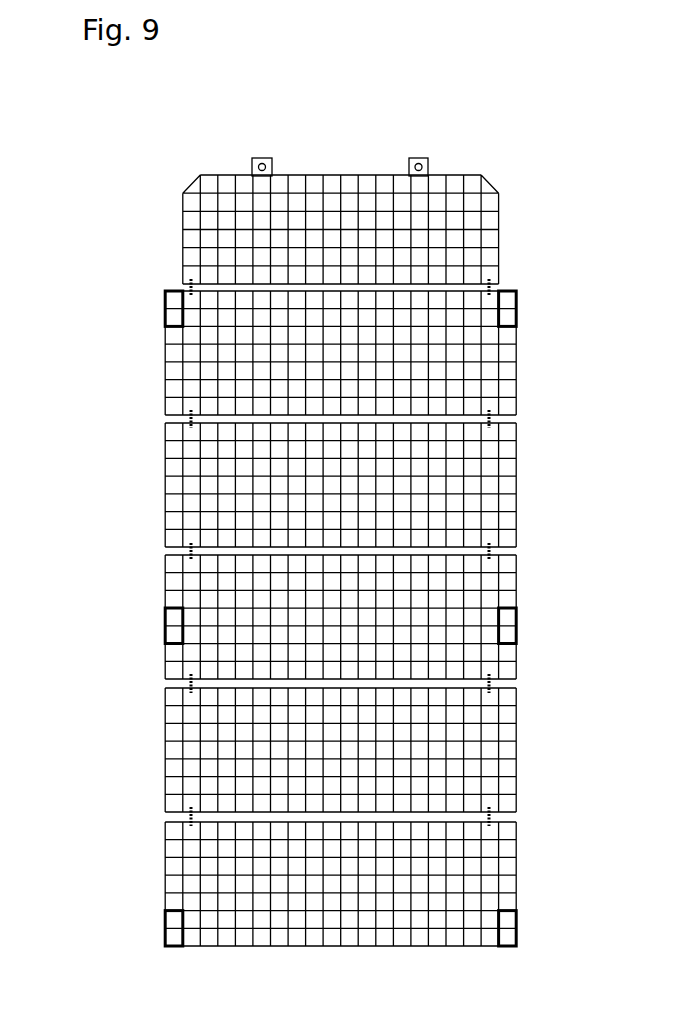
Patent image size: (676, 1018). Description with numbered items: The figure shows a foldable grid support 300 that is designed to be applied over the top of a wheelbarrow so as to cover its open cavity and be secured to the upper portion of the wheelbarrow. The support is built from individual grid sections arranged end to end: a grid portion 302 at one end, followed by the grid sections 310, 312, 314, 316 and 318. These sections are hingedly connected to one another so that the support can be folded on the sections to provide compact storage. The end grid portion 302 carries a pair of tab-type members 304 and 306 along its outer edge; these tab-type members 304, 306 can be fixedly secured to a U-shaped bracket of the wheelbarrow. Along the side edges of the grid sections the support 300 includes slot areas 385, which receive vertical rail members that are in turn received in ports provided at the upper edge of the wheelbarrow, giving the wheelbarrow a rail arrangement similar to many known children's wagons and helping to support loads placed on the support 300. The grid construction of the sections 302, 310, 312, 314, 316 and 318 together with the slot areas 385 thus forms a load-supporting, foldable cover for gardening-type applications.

The foldable grid support 300 is at (118, 512).
The grid portion 302 is at (500, 220).
The tab-type member 304 is at (418, 158).
The tab-type member 306 is at (267, 157).
The grid section 310 is at (519, 356).
The grid section 312 is at (518, 482).
The grid section 314 is at (518, 600).
The grid section 316 is at (518, 752).
The grid section 318 is at (518, 868).
The slot area 385 is at (163, 308).